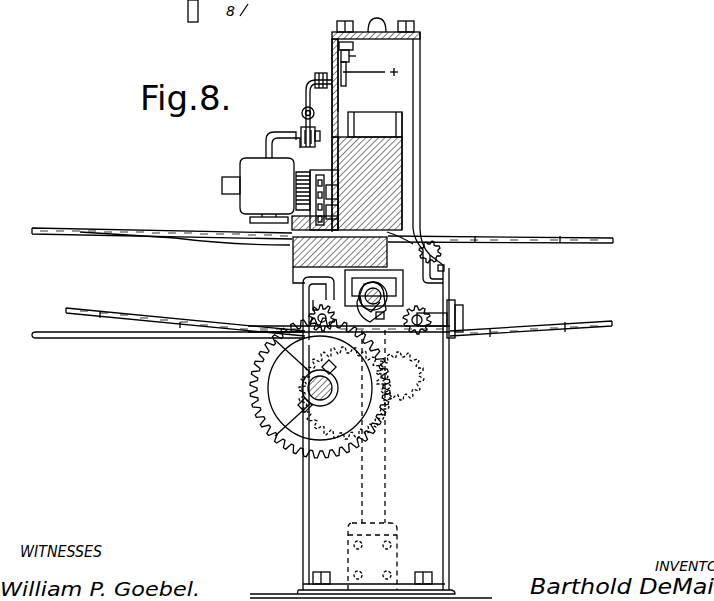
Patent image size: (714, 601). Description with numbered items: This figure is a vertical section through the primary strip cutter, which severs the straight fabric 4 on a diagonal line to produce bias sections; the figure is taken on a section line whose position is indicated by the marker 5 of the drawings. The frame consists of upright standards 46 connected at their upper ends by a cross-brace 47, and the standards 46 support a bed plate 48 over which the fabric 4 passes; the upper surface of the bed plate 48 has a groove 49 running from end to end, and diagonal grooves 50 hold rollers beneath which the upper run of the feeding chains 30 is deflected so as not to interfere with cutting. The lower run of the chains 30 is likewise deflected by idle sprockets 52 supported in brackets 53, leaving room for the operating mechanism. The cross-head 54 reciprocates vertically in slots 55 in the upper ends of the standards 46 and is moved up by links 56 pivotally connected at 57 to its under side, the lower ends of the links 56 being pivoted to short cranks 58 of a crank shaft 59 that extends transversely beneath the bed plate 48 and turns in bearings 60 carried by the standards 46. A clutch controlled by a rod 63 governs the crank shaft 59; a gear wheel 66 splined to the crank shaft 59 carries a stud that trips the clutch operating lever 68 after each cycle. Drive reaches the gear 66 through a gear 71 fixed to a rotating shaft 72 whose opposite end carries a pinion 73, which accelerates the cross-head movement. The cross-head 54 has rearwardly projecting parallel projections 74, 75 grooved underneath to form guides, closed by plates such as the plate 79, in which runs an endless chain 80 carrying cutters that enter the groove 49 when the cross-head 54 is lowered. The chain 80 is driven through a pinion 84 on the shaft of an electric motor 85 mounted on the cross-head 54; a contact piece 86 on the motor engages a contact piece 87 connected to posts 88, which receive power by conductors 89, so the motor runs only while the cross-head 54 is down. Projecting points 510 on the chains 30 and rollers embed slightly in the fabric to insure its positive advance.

The fabric 4 is at (100, 231).
The cross bar 5 is at (178, 226).
The chains 30 is at (568, 244).
The upright standards 46 is at (421, 78).
The cross-brace 47 is at (421, 36).
The bed plate 48 is at (300, 270).
The groove 49 is at (302, 254).
The grooves 50 is at (338, 222).
The idle sprockets 52 is at (371, 464).
The brackets 53 is at (310, 320).
The cross-head 54 is at (404, 152).
The slots 55 is at (375, 124).
The links 56 is at (440, 258).
The pivot connection 57 is at (404, 230).
The short cranks 58 is at (400, 371).
The crank shaft 59 is at (392, 293).
The bearings 60 is at (328, 291).
The rod 63 is at (103, 339).
The gear wheel 66 is at (444, 268).
The clutch operating lever 68 is at (446, 280).
The gear 71 is at (256, 408).
The rotating shaft 72 is at (330, 405).
The pinion 73 is at (290, 388).
The projection 74 is at (252, 242).
The projection 75 is at (303, 147).
The plate 79 is at (268, 152).
The endless chain 80 is at (403, 138).
The pinion 84 is at (296, 182).
The electric motor 85 is at (258, 190).
The contact piece 86 is at (316, 79).
The contact piece 87 is at (342, 60).
The posts 88 is at (362, 32).
The conductors 89 is at (370, 80).
The projecting points 510 is at (520, 331).